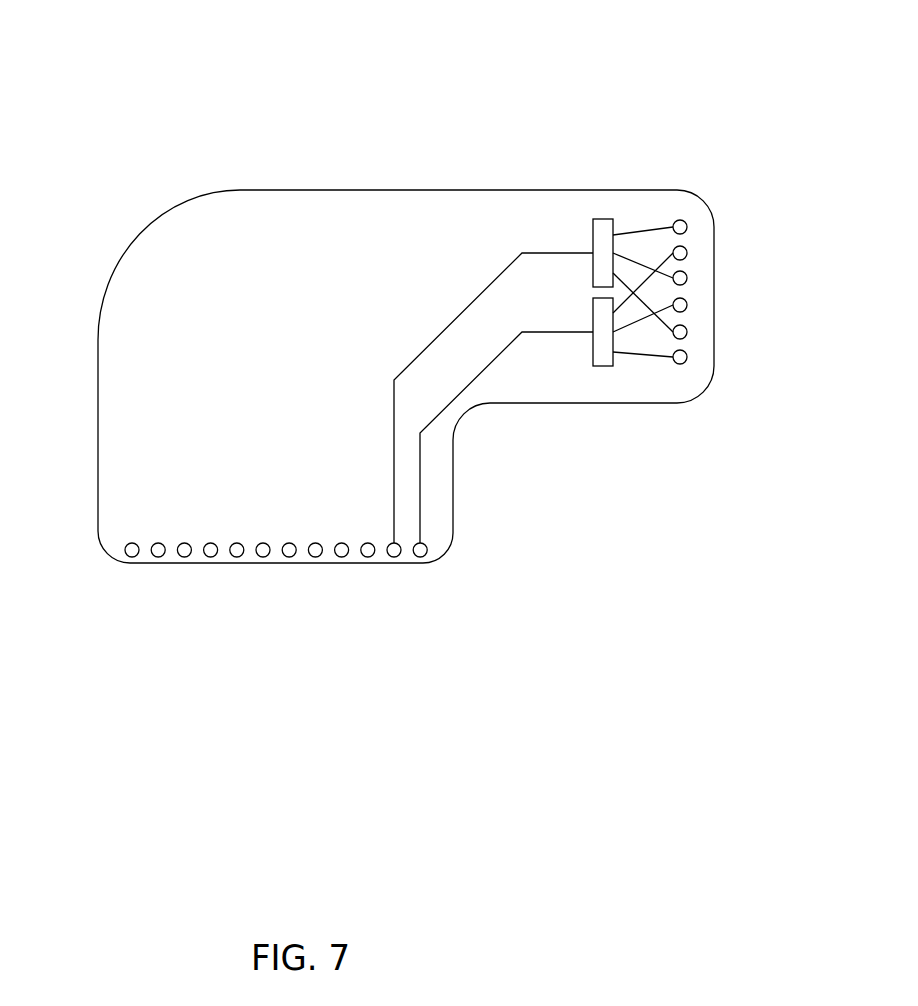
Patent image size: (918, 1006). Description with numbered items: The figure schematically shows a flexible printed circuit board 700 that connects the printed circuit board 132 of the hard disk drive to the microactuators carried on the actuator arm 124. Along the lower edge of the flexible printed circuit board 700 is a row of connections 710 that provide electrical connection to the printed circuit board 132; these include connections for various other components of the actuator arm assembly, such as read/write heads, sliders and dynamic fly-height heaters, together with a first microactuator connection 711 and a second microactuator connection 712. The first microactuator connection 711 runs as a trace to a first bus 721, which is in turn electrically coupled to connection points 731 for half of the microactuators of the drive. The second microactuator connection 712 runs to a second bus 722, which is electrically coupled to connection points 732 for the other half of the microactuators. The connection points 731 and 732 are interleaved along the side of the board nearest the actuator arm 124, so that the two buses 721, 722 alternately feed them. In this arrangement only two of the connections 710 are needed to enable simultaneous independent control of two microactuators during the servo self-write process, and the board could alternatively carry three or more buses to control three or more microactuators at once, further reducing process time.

The flexible printed circuit board 700 is at (138, 92).
The connections 710 is at (114, 550).
The first microactuator connection 711 is at (394, 557).
The second microactuator connection 712 is at (420, 557).
The first bus 721 is at (593, 232).
The second bus 722 is at (600, 366).
The connection points 731 is at (680, 220).
The connection points 732 is at (687, 253).
The actuator arm 124 is at (777, 304).
The printed circuit board 132 is at (297, 597).